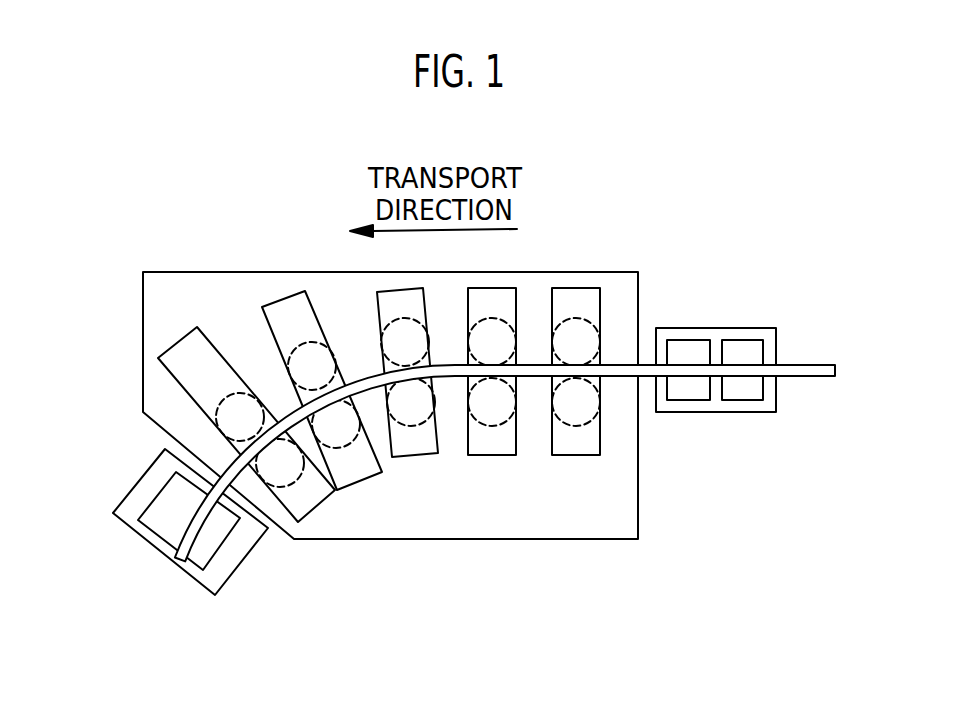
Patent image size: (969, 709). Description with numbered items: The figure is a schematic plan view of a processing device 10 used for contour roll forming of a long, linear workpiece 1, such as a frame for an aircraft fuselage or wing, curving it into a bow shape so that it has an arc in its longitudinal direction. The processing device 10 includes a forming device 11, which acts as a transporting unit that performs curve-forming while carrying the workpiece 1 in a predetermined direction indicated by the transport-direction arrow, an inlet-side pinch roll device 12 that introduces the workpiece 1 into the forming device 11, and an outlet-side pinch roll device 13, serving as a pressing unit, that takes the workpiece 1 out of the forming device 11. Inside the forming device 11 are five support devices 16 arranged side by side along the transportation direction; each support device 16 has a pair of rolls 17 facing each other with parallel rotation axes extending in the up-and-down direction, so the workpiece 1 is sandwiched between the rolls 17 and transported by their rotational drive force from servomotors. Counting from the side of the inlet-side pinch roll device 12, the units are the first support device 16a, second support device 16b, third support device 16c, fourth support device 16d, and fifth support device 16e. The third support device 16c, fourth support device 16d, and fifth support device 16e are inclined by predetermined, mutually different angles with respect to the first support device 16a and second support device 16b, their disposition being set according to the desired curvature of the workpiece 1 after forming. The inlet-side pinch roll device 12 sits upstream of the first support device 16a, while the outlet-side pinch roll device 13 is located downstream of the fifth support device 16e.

The workpiece 1 is at (807, 372).
The processing device 10 is at (672, 202).
The forming device 11 is at (305, 247).
The inlet-side pinch roll device 12 is at (715, 413).
The outlet-side pinch roll device 13 is at (218, 573).
The support device 16 is at (603, 602).
The first support device 16a is at (573, 445).
The second support device 16b is at (490, 445).
The third support device 16c is at (422, 450).
The fourth support device 16d is at (358, 468).
The fifth support device 16e is at (307, 503).
The roll 17 is at (578, 318).